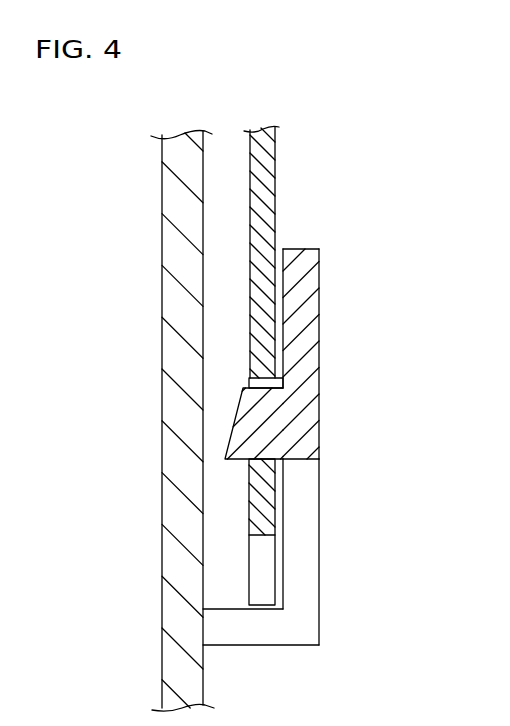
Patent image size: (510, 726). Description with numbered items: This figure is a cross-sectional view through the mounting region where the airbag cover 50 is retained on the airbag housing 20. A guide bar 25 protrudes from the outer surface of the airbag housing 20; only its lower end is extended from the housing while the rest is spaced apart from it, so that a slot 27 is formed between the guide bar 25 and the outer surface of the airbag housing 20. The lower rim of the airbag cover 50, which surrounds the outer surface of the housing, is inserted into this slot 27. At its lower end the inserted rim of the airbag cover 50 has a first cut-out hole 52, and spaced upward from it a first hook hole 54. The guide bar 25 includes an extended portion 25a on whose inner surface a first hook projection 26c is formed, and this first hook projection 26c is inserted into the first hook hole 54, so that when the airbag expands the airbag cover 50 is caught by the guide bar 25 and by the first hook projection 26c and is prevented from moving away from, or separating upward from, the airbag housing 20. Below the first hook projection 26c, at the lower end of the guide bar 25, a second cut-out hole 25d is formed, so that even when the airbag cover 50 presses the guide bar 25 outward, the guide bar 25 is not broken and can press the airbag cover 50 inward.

The airbag housing 20 is at (190, 563).
The airbag cover 50 is at (260, 220).
The first hook hole 54 is at (268, 383).
The extended portion 25a is at (298, 309).
The first hook projection 26c is at (246, 443).
The first cut-out hole 52 is at (266, 548).
The second cut-out hole 25d is at (300, 589).
The slot 27 is at (233, 359).
The guide bar 25 is at (350, 430).